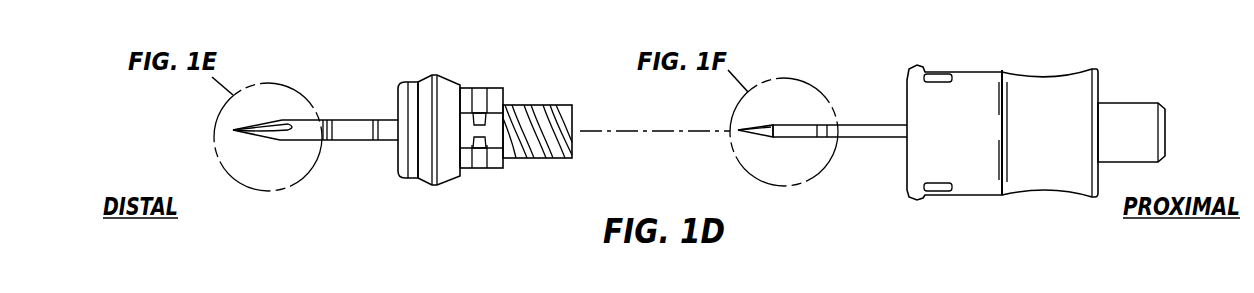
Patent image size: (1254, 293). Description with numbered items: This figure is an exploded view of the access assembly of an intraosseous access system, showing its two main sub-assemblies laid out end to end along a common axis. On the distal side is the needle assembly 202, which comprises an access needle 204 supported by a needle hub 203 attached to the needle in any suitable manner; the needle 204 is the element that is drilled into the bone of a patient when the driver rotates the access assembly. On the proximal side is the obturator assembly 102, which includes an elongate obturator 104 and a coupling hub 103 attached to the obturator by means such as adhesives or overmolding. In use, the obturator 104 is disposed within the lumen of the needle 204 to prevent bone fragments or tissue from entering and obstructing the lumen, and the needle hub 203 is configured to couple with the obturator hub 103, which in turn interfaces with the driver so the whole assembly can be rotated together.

The obturator assembly 102 is at (866, 182).
The coupling hub 103 is at (977, 92).
The obturator 104 is at (795, 125).
The needle assembly 202 is at (347, 182).
The needle hub 203 is at (450, 90).
The needle 204 is at (308, 128).